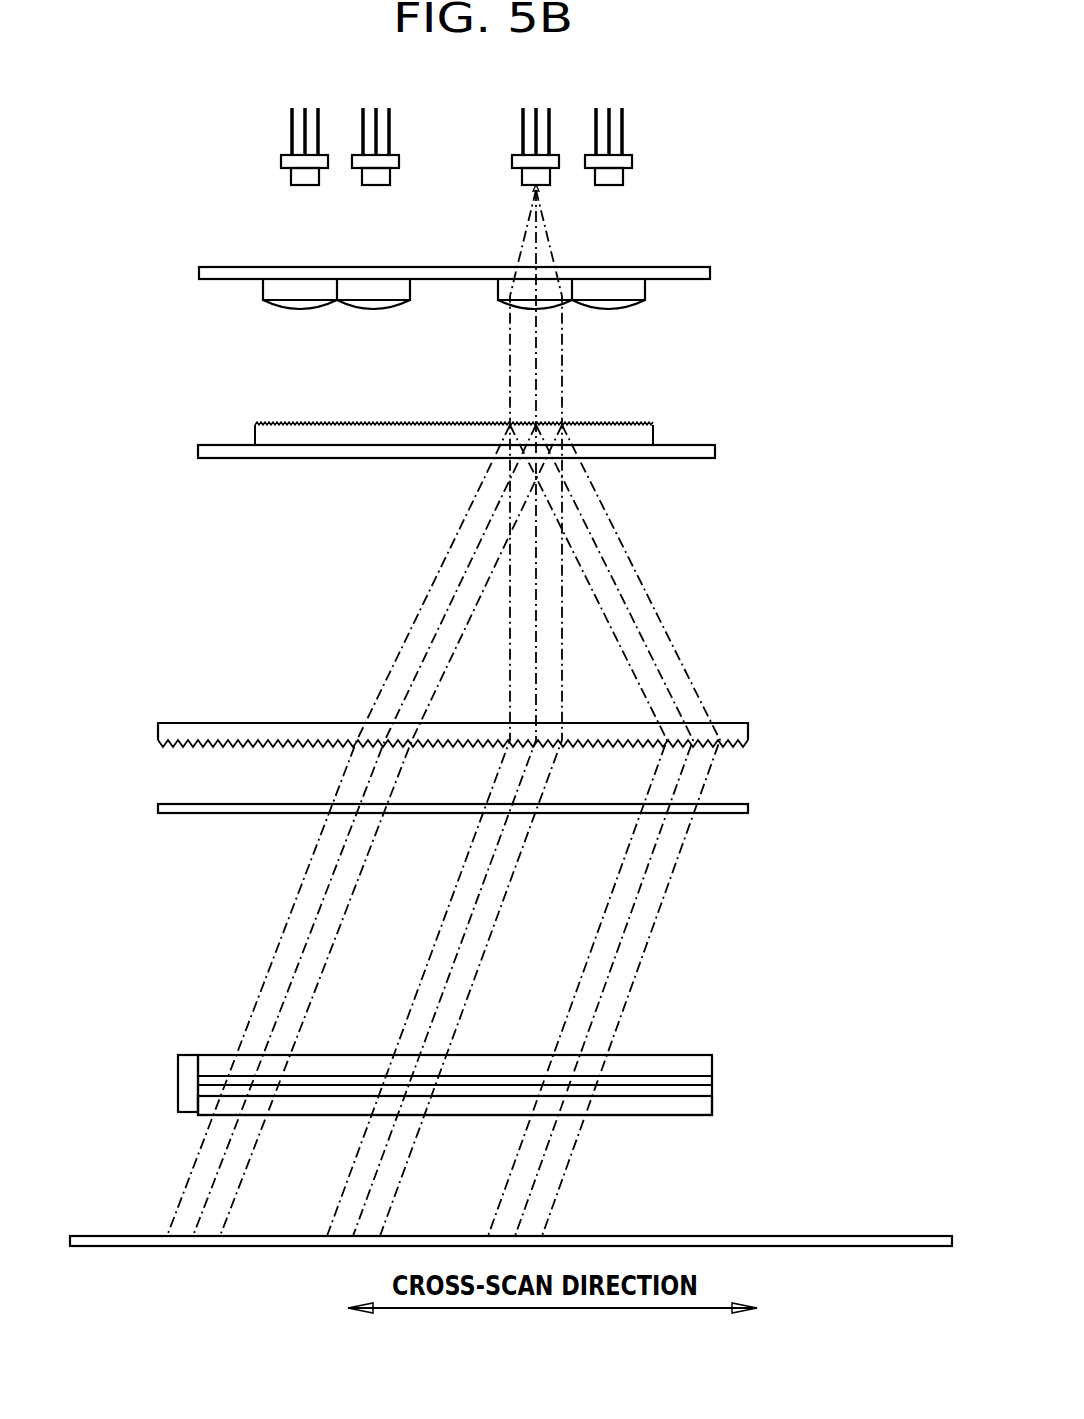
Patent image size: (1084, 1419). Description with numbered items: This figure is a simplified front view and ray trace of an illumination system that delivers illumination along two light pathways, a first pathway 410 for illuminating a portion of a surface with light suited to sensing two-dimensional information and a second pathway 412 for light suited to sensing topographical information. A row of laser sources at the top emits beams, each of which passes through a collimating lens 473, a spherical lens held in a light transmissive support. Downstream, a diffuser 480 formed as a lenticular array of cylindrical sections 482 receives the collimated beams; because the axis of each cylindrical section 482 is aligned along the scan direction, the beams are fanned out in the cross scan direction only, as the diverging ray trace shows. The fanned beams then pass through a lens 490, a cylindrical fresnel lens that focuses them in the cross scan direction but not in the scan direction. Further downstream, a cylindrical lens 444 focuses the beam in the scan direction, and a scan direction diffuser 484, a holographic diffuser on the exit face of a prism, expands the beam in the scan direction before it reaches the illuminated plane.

The first pathway 410 is at (715, 176).
The collimating lens 473 is at (543, 293).
The diffuser 480 is at (678, 430).
The cylindrical section 482 is at (255, 436).
The lens 490 is at (180, 733).
The cylindrical lens 444 is at (692, 1063).
The scan direction diffuser 484 is at (697, 1105).
The second pathway 412 is at (795, 1236).